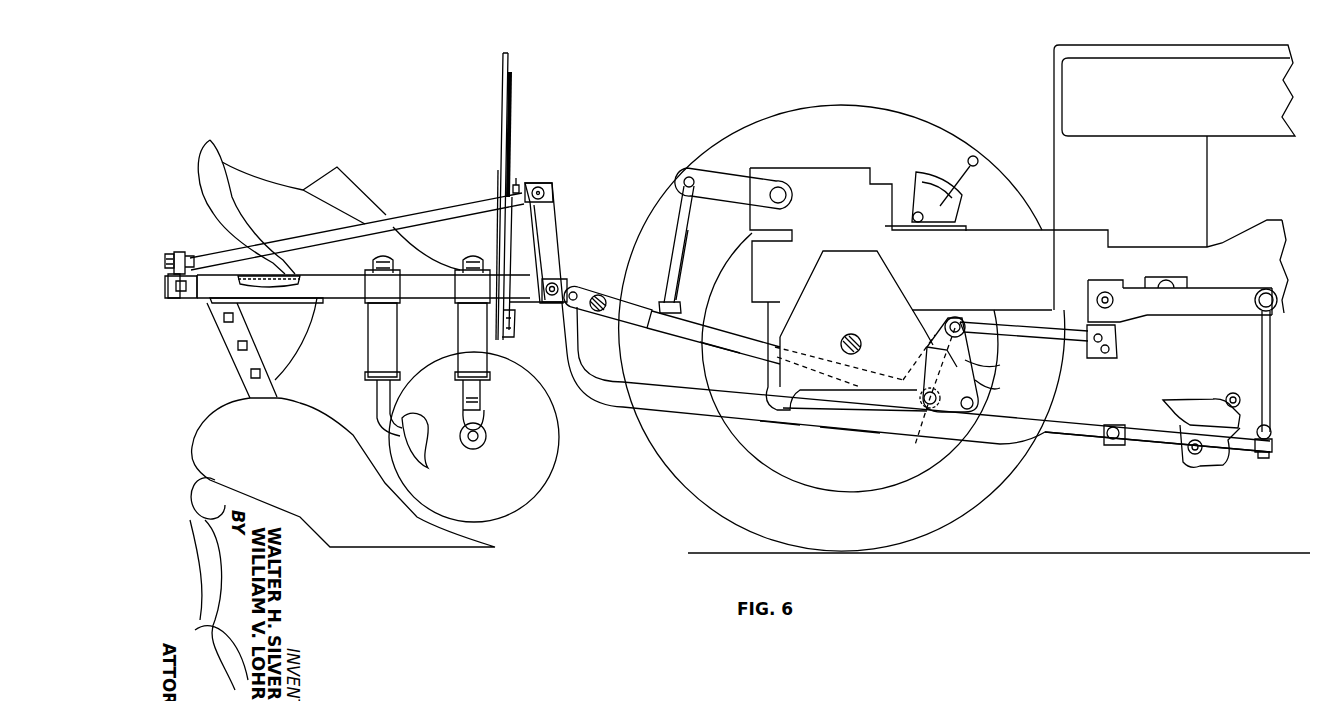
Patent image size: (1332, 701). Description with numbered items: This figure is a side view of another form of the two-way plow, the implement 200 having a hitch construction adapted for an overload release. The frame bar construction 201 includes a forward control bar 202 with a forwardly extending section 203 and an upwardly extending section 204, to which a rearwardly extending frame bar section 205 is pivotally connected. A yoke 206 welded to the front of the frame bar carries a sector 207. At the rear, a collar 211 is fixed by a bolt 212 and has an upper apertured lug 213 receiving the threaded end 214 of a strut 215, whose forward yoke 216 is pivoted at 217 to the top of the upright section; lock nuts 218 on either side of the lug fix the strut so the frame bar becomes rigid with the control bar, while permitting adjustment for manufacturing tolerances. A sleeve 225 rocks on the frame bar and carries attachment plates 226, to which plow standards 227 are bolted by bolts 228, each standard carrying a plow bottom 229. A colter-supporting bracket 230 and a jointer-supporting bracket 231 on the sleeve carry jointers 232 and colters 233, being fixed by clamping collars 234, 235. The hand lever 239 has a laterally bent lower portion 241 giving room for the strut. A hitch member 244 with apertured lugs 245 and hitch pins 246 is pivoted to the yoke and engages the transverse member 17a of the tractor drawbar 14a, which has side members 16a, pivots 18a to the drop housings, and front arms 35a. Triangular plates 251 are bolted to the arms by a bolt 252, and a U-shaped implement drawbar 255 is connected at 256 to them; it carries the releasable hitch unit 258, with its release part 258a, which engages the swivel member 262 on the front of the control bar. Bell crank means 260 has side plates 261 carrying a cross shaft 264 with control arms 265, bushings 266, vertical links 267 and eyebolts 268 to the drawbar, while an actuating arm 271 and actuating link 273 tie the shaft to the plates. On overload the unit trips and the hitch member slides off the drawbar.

The implement 200 is at (381, 166).
The beam or frame bar construction 201 is at (705, 424).
The forward control bar 202 is at (847, 434).
The forwardly extending section 203 is at (803, 419).
The upwardly extending section 204 is at (550, 222).
The rearwardly extending frame bar section 205 is at (263, 277).
The yoke 206 is at (526, 286).
The sector 207 is at (556, 243).
The collar 211 is at (178, 300).
The bolt 212 is at (186, 299).
The upper apertured lug portion 213 is at (171, 253).
The rear threaded end 214 is at (190, 258).
The strut member 215 is at (434, 206).
The yoke 216 is at (527, 183).
The pivotal connection 217 is at (553, 194).
The lock nuts 218 is at (363, 286).
The sleeve member 225 is at (428, 300).
The attachment plates 226 is at (293, 322).
The plow standard 227 is at (268, 387).
The bolts 228 is at (250, 374).
The plow bottom 229 is at (263, 186).
The colter-supporting bracket 230 is at (459, 343).
The jointer-supporting bracket 231 is at (366, 343).
The jointers 232 is at (421, 447).
The colters 233 is at (537, 456).
The clamping collar 234 is at (462, 269).
The clamping collar 235 is at (365, 276).
The hand lever 239 is at (512, 142).
The laterally bent lower portion 241 is at (503, 98).
The hitch member 244 is at (628, 331).
The rearwardly extending apertured lugs 245 is at (573, 291).
The hitch pin 246 is at (548, 299).
The triangular plates 251 is at (985, 376).
The bolt 252 is at (958, 320).
The implement drawbar 255 is at (1079, 433).
The connection 256 is at (974, 402).
The releasable hitch unit 258 is at (1200, 394).
The release part 258a is at (1241, 403).
The bell crank means 260 is at (1222, 287).
The side plates 261 is at (1116, 280).
The swivel member 262 is at (1137, 438).
The cross shaft 264 is at (1120, 315).
The control arms 265 is at (1214, 307).
The bushings 266 is at (1286, 292).
The link 267 is at (1270, 362).
The eyebolt 268 is at (1271, 436).
The actuating arm 271 is at (1112, 348).
The actuating link 273 is at (1026, 335).
The tractor drawbar 14a is at (723, 328).
The side members 16a is at (710, 340).
The transverse member 17a is at (630, 297).
The pivots 18a is at (860, 381).
The front upwardly extending arms 35a is at (958, 322).